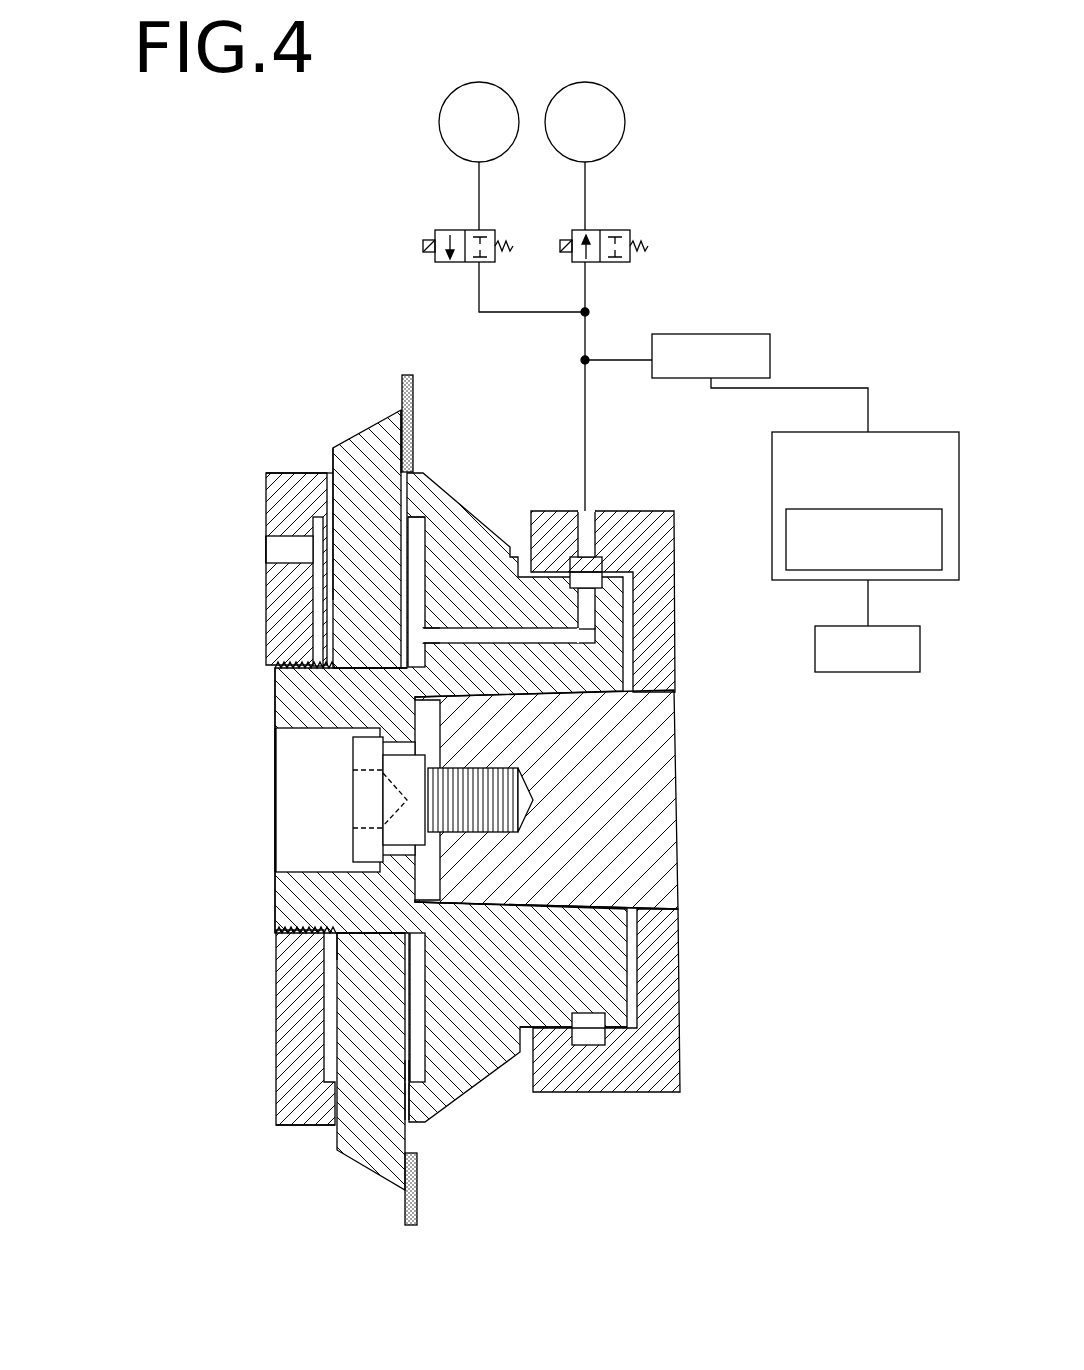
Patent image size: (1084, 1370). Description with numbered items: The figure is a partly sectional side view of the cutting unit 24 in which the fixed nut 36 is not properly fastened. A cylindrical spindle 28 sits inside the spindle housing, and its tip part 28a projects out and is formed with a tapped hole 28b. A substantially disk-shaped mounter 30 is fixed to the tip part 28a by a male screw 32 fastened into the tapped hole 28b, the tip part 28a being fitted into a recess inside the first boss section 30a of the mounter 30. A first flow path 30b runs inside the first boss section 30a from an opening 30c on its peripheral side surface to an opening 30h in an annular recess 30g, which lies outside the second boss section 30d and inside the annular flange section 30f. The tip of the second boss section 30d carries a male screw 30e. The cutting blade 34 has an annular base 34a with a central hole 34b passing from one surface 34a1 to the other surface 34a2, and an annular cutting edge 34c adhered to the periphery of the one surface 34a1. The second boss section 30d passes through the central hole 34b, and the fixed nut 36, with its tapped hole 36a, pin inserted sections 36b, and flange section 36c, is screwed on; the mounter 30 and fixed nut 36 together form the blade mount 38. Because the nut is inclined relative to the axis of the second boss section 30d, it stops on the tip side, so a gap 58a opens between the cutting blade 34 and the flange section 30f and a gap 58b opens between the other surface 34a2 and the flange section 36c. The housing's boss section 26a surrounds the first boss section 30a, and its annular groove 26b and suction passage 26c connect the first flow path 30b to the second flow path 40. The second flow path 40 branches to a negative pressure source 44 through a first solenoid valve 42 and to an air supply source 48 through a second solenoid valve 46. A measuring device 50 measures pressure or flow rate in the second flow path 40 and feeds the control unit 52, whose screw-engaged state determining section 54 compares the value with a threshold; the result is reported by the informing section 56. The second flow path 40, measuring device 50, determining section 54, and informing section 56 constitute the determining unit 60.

The cutting unit 24 is at (125, 547).
The boss section 26a is at (620, 1097).
The annular groove 26b is at (675, 527).
The suction passage 26c is at (585, 528).
The spindle 28 is at (655, 765).
The tip part 28a is at (458, 915).
The tapped hole 28b is at (532, 800).
The mounter 30 is at (337, 1148).
The first boss section 30a is at (602, 995).
The first flow path 30b is at (588, 635).
The opening 30c is at (588, 560).
The second boss section 30d is at (293, 935).
The male screw 30e is at (276, 932).
The flange section 30f is at (400, 1093).
The recess 30g is at (410, 1011).
The opening 30h is at (408, 633).
The male screw 32 is at (355, 800).
The cutting blade 34 is at (414, 306).
The base 34a is at (363, 437).
The one surface 34a1 is at (412, 545).
The other surface 34a2 is at (333, 543).
The central hole 34b is at (360, 676).
The cutting edge 34c is at (407, 462).
The fixed nut 36 is at (278, 1100).
The tapped hole 36a is at (276, 673).
The pin inserted section 36b is at (280, 548).
The flange section 36c is at (327, 503).
The blade mount 38 is at (175, 1240).
The second flow path 40 is at (584, 380).
The first solenoid valve 42 is at (618, 228).
The negative pressure source 44 is at (625, 124).
The second solenoid valve 46 is at (442, 228).
The air supply source 48 is at (439, 124).
The measuring device 50 is at (698, 333).
The control unit 52 is at (912, 430).
The screw-engaged state determining section 54 is at (873, 508).
The informing section 56 is at (900, 626).
The gap 58a is at (407, 460).
The gap 58b is at (327, 458).
The determining unit 60 is at (810, 212).